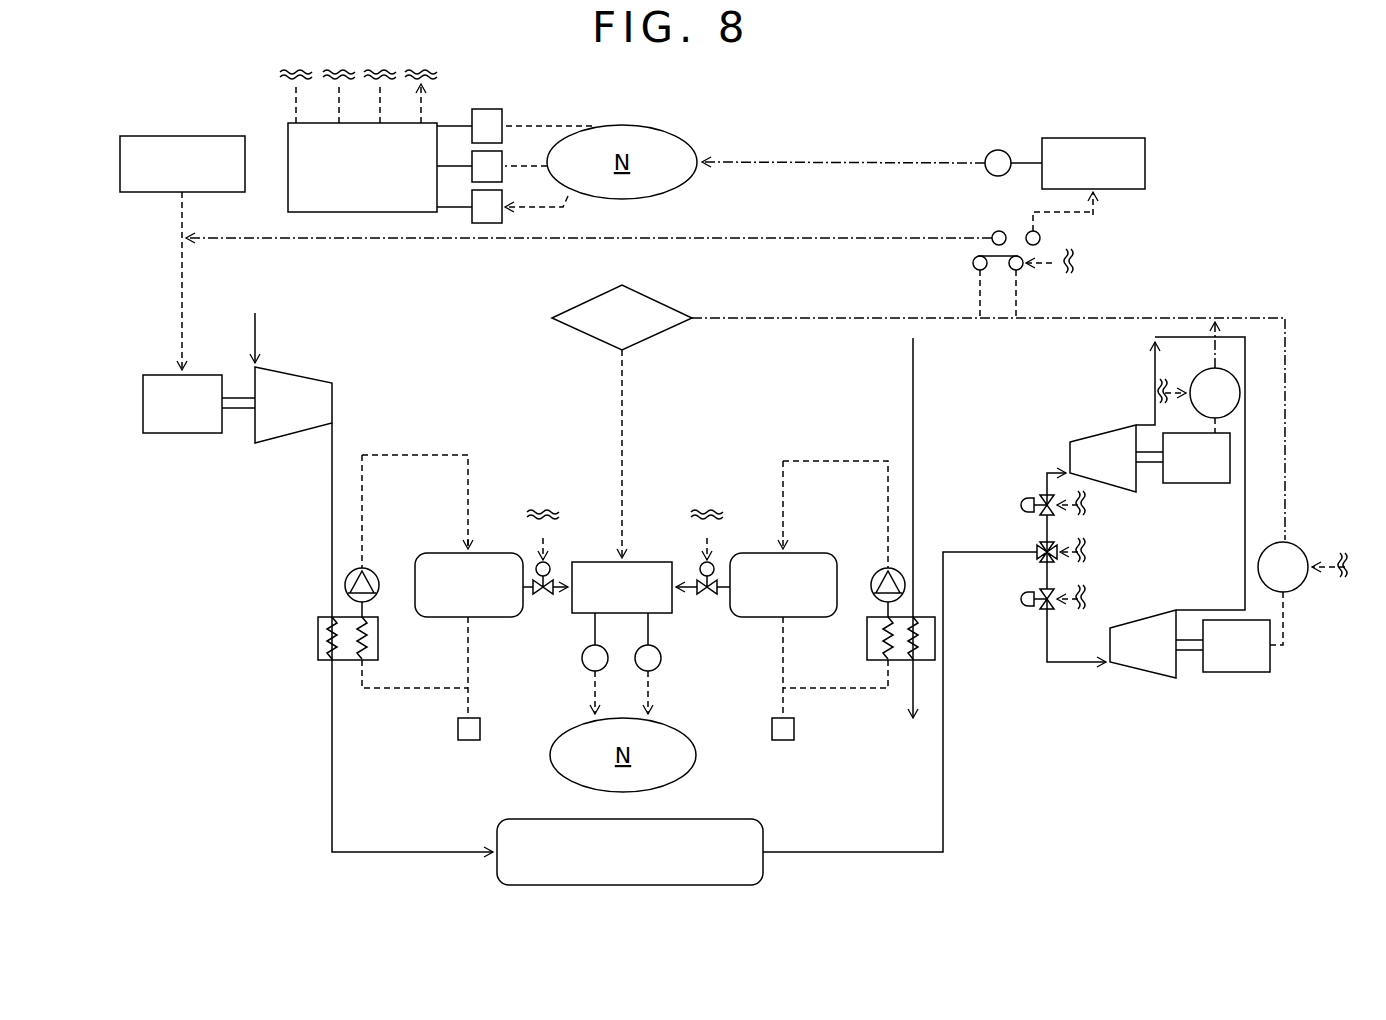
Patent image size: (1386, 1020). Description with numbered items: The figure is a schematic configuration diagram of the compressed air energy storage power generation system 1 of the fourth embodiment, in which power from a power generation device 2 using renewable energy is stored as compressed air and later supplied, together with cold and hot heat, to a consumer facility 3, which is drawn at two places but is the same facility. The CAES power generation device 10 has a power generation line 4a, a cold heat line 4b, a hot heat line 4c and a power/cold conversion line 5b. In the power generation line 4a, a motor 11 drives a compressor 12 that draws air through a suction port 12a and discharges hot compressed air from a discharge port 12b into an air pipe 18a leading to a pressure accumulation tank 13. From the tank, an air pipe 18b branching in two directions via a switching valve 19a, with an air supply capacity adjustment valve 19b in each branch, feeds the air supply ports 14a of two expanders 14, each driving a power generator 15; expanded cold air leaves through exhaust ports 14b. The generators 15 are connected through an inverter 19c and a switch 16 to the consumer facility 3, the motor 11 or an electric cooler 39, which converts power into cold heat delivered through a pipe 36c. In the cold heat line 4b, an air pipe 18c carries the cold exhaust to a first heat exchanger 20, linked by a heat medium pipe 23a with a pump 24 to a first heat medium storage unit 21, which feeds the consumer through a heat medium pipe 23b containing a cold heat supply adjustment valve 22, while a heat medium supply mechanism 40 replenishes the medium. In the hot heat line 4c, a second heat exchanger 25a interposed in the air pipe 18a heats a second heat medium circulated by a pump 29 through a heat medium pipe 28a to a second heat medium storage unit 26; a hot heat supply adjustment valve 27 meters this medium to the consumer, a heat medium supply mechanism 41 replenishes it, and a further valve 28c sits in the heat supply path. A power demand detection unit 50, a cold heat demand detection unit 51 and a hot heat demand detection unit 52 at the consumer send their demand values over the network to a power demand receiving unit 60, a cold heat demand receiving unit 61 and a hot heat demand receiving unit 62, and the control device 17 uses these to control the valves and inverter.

The compressed air energy storage power generation system 1 is at (247, 728).
The power generation device 2 is at (177, 136).
The consumer facility 3 is at (1144, 140).
The power generation line 4a is at (963, 801).
The cold heat line 4b is at (781, 447).
The hot heat line 4c is at (480, 498).
The power/cold conversion line 5b is at (712, 310).
The CAES power generation device 10 is at (1085, 813).
The motor 11 is at (182, 433).
The compressor 12 is at (332, 383).
The suction port 12a is at (260, 362).
The discharge port 12b is at (332, 422).
The pressure accumulation tank 13 is at (653, 885).
The expander 14 is at (1095, 434).
The air supply port 14a is at (1068, 468).
The exhaust port 14b is at (1140, 424).
The power generator 15 is at (1193, 483).
The switch 16 is at (972, 264).
The control device 17 is at (288, 130).
The air pipe 18a is at (348, 852).
The air pipe 18b is at (945, 852).
The air pipe 18c is at (913, 359).
The switching valve 19a is at (1060, 540).
The air supply capacity adjustment valve 19b is at (1022, 502).
The inverter 19c is at (1193, 382).
The first heat exchanger 20 is at (867, 644).
The first heat medium storage unit 21 is at (752, 550).
The cold heat supply adjustment valve 22 is at (714, 602).
The heat medium pipe 23a is at (825, 461).
The heat medium pipe 23b is at (695, 596).
The pump 24 is at (878, 570).
The second heat exchanger 25a is at (378, 640).
The second heat medium storage unit 26 is at (448, 550).
The hot heat supply adjustment valve 27 is at (533, 605).
The heat medium pipe 28a is at (454, 455).
The heat valve 28c is at (553, 600).
The pump 29 is at (362, 570).
The pipe 36c is at (620, 448).
The electric cooler 39 is at (552, 304).
The heat medium supply mechanism 40 is at (785, 740).
The heat medium supply mechanism 41 is at (458, 740).
The power demand detection unit 50 is at (987, 153).
The cold heat demand detection unit 51 is at (663, 667).
The hot heat demand detection unit 52 is at (583, 667).
The power demand receiving unit 60 is at (502, 109).
The cold heat demand receiving unit 61 is at (502, 150).
The hot heat demand receiving unit 62 is at (504, 202).